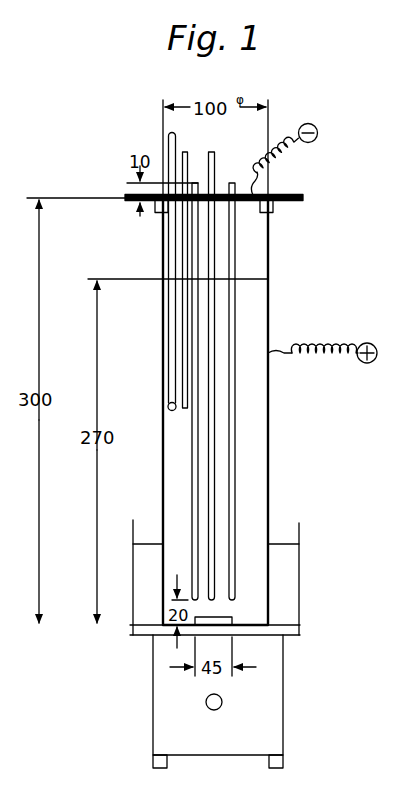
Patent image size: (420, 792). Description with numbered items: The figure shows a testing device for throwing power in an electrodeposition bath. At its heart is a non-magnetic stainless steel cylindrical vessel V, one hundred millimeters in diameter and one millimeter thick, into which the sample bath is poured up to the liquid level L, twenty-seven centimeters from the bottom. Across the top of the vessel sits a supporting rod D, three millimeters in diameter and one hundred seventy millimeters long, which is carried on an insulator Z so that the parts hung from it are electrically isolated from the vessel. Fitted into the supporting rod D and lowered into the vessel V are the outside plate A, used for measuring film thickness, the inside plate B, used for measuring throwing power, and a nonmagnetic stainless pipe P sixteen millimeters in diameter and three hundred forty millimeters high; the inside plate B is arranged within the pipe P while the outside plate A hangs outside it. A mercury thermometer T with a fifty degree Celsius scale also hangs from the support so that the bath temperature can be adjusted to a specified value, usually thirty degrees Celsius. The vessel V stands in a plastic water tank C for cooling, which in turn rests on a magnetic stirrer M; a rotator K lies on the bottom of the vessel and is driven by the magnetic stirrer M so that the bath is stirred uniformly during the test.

The mercury thermometer T is at (168, 139).
The supporting rod D is at (297, 195).
The insulator Z is at (273, 204).
The outside plate for measuring film thickness A is at (184, 252).
The inside plate for measuring throwing power B is at (213, 308).
The nonmagnetic stainless pipe P is at (235, 403).
The non-magnetic stainless steel cylindrical vessel V is at (270, 453).
The liquid level of the electrodeposition bath L is at (170, 281).
The plastic water tank for cooling C is at (300, 556).
The rotator K is at (230, 618).
The magnetic stirrer M is at (278, 689).